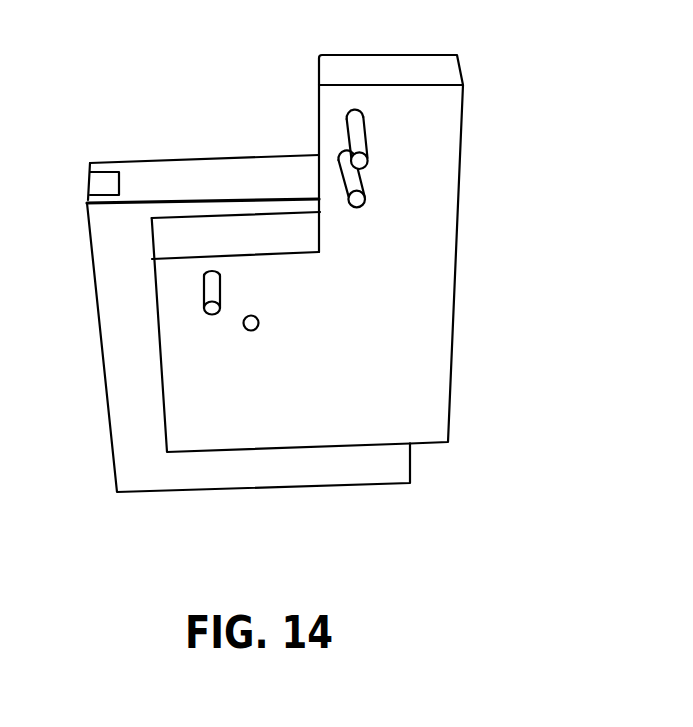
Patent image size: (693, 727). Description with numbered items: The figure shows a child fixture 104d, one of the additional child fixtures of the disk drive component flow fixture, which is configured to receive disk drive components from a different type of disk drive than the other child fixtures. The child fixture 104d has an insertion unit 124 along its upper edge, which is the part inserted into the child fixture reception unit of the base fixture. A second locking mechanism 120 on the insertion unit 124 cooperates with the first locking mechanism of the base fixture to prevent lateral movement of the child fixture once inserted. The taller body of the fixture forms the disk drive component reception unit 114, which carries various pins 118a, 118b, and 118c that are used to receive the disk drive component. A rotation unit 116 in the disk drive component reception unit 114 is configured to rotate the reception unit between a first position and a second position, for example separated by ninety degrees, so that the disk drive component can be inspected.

The child fixture 104d is at (463, 162).
The disk drive component reception unit 114 is at (455, 300).
The rotation unit 116 is at (256, 329).
The pin 118a is at (368, 135).
The pin 118b is at (365, 187).
The pin 118c is at (225, 290).
The second locking mechanism 120 is at (105, 183).
The insertion unit 124 is at (173, 193).